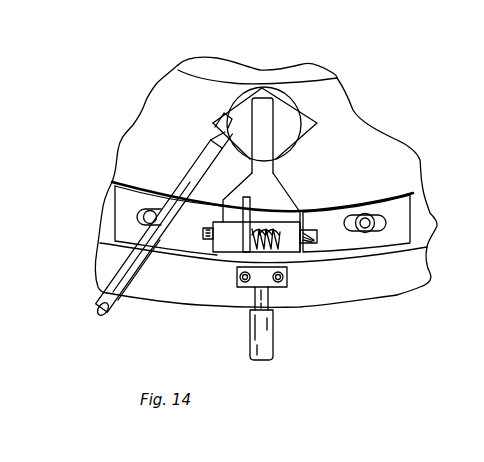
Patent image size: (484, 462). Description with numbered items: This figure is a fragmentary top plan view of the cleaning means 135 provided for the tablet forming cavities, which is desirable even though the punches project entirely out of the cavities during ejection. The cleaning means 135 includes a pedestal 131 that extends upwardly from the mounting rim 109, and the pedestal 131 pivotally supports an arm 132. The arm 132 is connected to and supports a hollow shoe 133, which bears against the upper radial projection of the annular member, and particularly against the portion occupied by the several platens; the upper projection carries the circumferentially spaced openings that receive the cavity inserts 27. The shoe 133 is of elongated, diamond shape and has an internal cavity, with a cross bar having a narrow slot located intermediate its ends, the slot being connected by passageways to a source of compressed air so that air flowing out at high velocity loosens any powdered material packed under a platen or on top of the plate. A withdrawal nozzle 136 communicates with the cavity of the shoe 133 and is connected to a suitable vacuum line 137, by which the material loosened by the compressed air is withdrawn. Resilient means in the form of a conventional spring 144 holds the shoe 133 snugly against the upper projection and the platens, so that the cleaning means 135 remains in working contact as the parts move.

The cavity inserts 27 is at (293, 94).
The mounting rim 109 is at (350, 290).
The pedestal 131 is at (305, 242).
The arm 132 is at (268, 166).
The hollow shoe 133 is at (303, 126).
The cleaning means 135 is at (203, 312).
The withdrawal nozzle 136 is at (213, 128).
The vacuum line 137 is at (106, 296).
The spring 144 is at (250, 206).